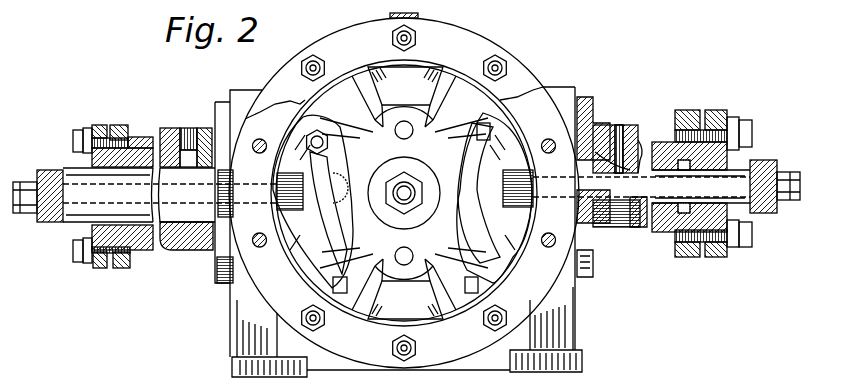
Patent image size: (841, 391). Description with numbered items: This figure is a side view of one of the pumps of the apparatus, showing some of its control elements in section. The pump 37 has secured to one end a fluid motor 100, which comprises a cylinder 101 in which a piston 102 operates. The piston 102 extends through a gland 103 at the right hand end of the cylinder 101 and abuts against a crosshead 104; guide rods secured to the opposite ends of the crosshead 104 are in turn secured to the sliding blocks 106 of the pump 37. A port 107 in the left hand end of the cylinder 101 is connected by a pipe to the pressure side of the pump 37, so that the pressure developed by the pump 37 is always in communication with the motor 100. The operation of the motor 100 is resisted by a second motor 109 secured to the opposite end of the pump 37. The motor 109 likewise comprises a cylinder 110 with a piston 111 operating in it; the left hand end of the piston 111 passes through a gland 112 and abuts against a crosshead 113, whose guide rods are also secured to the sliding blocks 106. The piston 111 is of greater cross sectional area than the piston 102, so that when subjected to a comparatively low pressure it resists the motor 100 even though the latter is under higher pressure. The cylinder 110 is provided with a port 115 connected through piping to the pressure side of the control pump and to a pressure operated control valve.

The pump 37 is at (442, 37).
The fluid motor 100 is at (646, 143).
The cylinder 101 is at (655, 135).
The piston 102 is at (653, 233).
The gland 103 is at (728, 162).
The crosshead 104 is at (762, 212).
The sliding blocks 106 is at (302, 240).
The port 107 is at (620, 127).
The second motor 109 is at (145, 172).
The cylinder 110 is at (175, 240).
The piston 111 is at (138, 137).
The gland 112 is at (90, 230).
The crosshead 113 is at (48, 168).
The port 115 is at (190, 137).